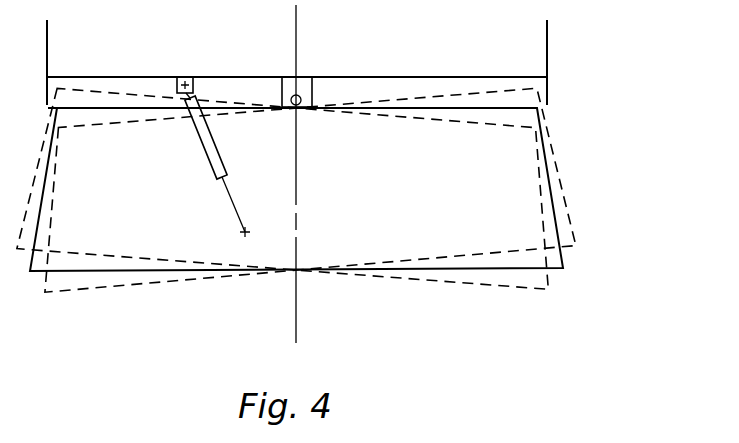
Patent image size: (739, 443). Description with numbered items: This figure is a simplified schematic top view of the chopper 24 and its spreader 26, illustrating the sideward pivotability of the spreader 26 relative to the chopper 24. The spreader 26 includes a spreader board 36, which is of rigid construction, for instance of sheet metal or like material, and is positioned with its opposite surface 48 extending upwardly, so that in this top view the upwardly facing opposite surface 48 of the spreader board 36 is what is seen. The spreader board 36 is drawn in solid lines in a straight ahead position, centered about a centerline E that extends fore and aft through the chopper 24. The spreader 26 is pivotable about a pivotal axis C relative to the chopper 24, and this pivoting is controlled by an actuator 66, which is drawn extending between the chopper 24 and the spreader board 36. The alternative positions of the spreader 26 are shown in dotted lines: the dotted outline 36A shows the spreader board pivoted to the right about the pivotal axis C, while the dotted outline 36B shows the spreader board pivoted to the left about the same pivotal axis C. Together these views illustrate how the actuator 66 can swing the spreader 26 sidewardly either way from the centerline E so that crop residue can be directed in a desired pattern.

The chopper 24 is at (552, 50).
The spreader 26 is at (361, 234).
The spreader board 36 is at (567, 266).
The spreader board pivoted to the right 36A is at (582, 237).
The spreader board pivoted to the left 36B is at (547, 292).
The opposite surface 48 is at (328, 96).
The actuator 66 is at (204, 152).
The pivotal axis C is at (301, 106).
The centerline E is at (298, 327).